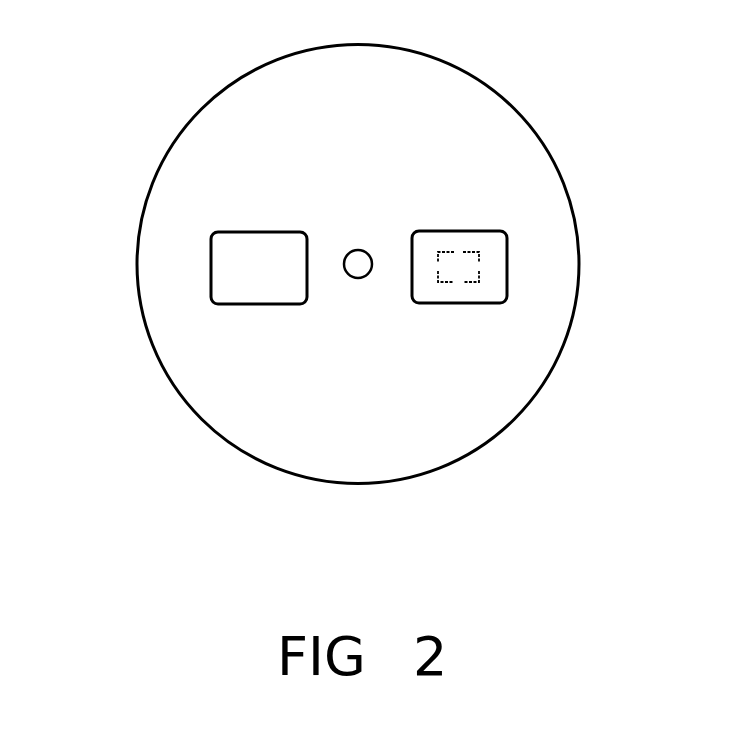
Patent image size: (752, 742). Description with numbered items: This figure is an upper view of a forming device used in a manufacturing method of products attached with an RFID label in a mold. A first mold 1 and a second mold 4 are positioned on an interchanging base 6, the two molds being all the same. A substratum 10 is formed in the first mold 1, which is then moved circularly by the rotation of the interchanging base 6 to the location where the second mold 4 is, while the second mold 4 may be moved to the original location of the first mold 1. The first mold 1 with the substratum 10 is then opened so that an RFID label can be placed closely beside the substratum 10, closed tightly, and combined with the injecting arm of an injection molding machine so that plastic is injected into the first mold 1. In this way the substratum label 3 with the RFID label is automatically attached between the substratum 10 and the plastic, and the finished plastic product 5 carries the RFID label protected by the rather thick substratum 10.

The first mold 1 is at (171, 263).
The substratum 10 is at (232, 285).
The substratum label 3 is at (514, 145).
The second mold 4 is at (556, 277).
The finished plastic product 5 is at (501, 277).
The interchanging base 6 is at (406, 264).